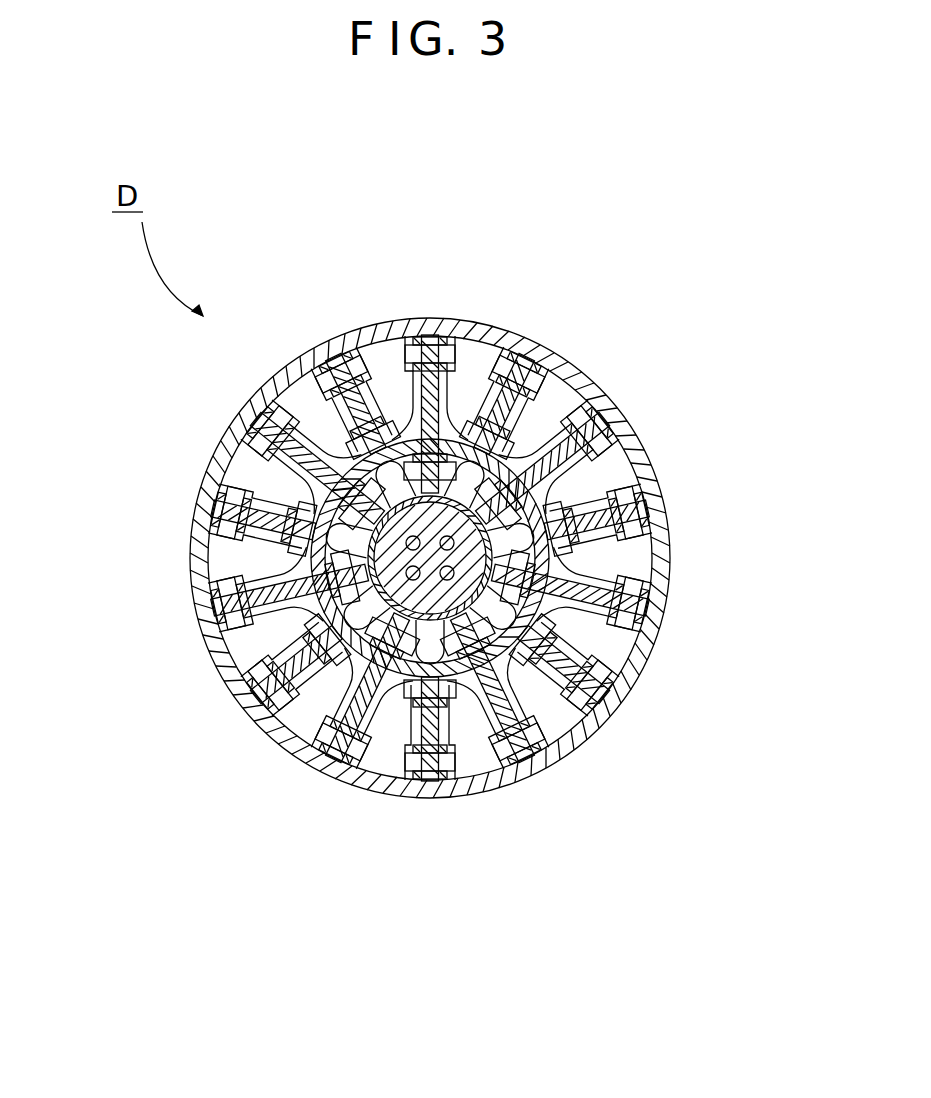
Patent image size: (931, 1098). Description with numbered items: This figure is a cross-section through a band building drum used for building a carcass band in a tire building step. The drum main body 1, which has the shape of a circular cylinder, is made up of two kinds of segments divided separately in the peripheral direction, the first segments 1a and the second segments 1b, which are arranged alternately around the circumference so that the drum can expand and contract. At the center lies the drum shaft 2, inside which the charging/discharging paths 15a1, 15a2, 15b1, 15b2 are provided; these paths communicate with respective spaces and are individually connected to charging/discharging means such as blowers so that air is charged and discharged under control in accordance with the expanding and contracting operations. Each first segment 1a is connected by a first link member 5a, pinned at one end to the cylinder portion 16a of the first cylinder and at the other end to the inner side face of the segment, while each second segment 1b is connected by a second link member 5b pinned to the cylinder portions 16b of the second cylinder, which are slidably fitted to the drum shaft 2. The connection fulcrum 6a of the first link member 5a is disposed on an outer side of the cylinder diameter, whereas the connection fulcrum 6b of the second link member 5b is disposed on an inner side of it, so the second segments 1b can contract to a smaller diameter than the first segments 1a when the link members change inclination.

The drum main body 1 is at (668, 520).
The first segment 1a is at (523, 347).
The second segment 1b is at (452, 330).
The drum shaft 2 is at (455, 577).
The first link member 5a is at (442, 773).
The second link member 5b is at (410, 345).
The connection fulcrum 6a is at (240, 562).
The connection fulcrum 6b is at (345, 527).
The charging/discharging path 15a1 is at (318, 512).
The charging/discharging path 15a2 is at (563, 745).
The charging/discharging path 15b1 is at (296, 736).
The charging/discharging path 15b2 is at (637, 437).
The cylinder portion 16a is at (245, 688).
The cylinder portion 16b is at (303, 375).